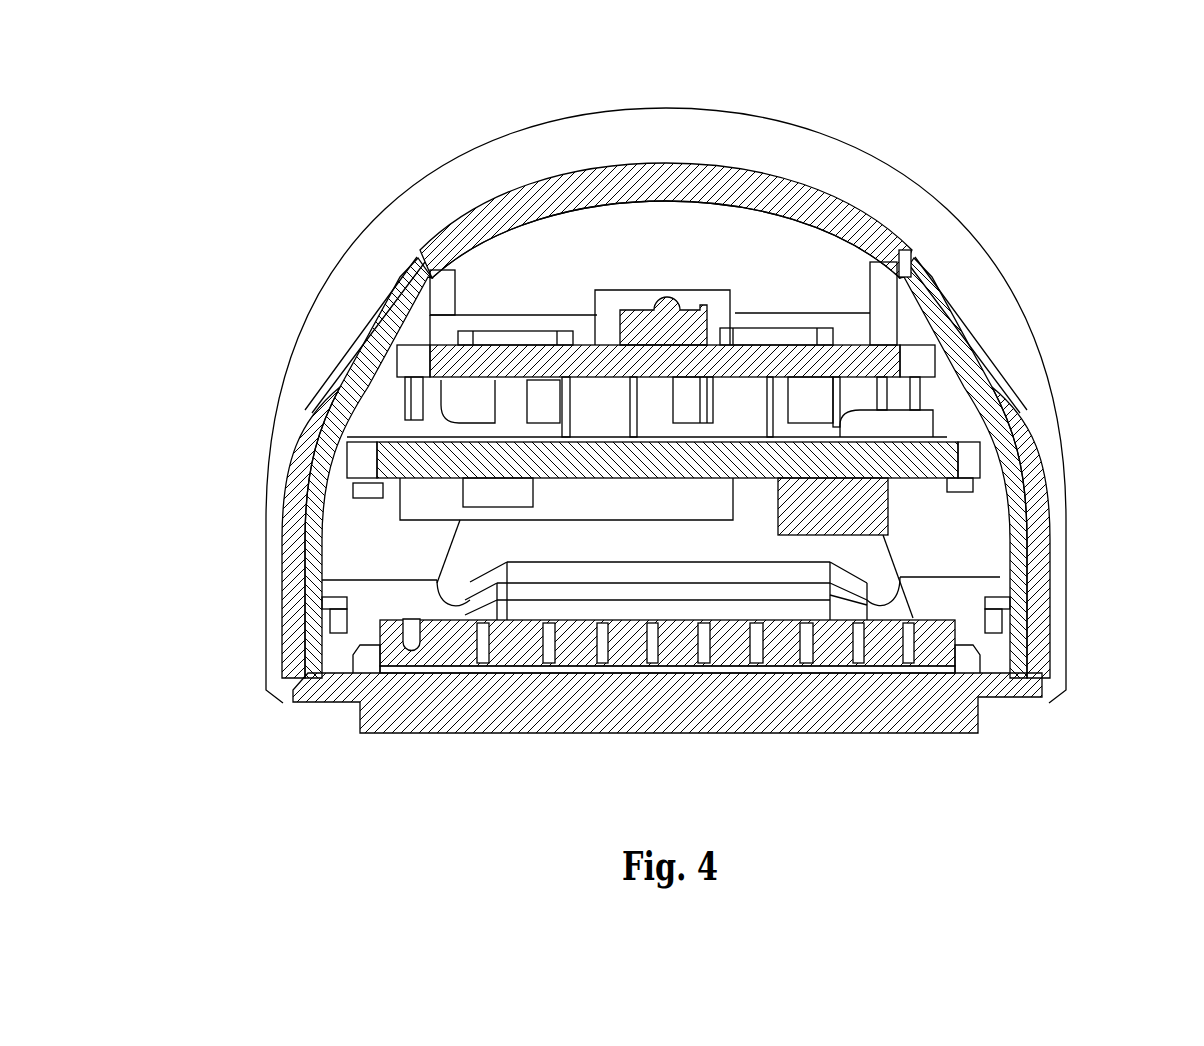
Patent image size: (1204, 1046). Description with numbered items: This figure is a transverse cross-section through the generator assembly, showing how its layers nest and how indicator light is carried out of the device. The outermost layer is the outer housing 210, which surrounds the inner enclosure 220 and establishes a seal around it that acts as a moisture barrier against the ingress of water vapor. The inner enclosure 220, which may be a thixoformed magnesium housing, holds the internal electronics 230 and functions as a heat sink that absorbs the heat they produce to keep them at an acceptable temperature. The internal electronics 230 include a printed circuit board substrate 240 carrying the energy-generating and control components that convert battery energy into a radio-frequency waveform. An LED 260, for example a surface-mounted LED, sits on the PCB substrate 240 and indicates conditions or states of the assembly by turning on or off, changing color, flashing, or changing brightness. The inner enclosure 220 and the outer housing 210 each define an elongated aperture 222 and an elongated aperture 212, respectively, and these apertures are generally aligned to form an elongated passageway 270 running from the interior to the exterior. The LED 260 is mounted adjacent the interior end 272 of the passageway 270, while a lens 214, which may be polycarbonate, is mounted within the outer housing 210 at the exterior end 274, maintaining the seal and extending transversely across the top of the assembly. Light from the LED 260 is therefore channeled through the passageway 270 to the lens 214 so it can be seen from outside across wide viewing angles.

The outer housing 210 is at (985, 370).
The elongated aperture 212 is at (906, 252).
The lens 214 is at (677, 272).
The inner enclosure 220 is at (1018, 527).
The elongated aperture 222 is at (953, 297).
The internal electronics 230 is at (488, 413).
The printed circuit board substrate 240 is at (453, 372).
The LED 260 is at (652, 298).
The elongated passageway 270 is at (663, 237).
The interior end 272 is at (660, 268).
The exterior end 274 is at (663, 208).